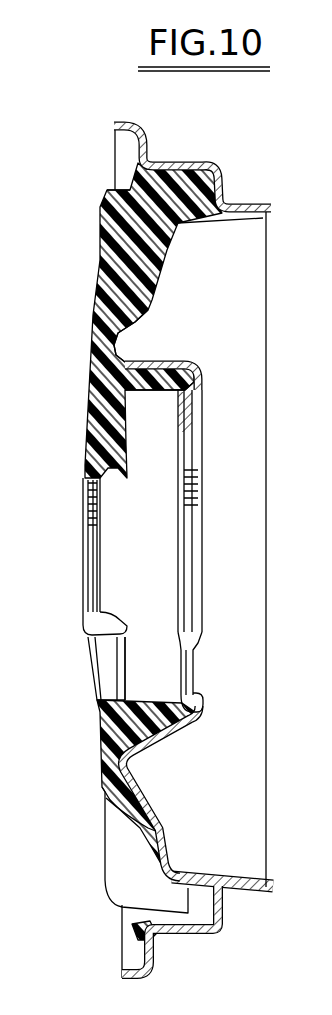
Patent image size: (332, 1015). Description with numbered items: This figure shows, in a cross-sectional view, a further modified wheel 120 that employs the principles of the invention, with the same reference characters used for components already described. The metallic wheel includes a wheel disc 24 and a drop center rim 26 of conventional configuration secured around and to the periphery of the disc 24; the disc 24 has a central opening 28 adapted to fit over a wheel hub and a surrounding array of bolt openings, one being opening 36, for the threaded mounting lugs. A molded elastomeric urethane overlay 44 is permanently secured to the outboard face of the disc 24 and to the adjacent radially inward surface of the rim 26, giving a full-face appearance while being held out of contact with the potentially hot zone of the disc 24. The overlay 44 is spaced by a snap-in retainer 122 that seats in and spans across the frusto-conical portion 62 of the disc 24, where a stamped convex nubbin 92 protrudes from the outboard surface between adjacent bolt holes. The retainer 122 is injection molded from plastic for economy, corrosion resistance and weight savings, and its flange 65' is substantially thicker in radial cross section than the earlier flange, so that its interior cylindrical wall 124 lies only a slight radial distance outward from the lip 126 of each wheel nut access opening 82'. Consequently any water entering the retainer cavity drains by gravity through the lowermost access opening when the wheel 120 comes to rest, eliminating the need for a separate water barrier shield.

The modified wheel 120 is at (98, 134).
The drop center rim 26 is at (221, 183).
The overlay 44 is at (97, 246).
The wheel disc 24 is at (267, 281).
The flange 65' is at (85, 342).
The nubbin 92 is at (144, 364).
The frusto-conical portion 62 is at (183, 365).
The interior cylindrical wall 124 is at (150, 689).
The snap-in retainer 122 is at (193, 508).
The central opening 28 is at (190, 548).
The wheel nut access opening 82' is at (77, 632).
The lip 126 is at (118, 699).
The opening 36 is at (182, 672).